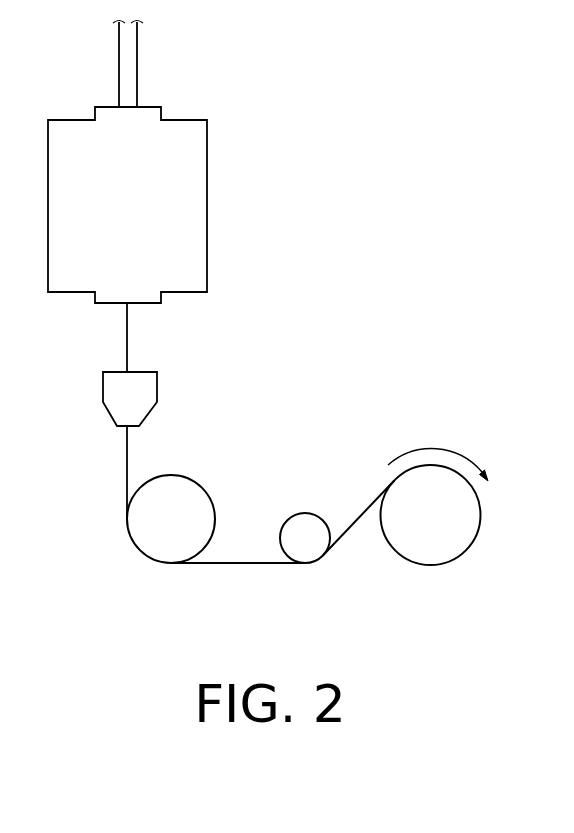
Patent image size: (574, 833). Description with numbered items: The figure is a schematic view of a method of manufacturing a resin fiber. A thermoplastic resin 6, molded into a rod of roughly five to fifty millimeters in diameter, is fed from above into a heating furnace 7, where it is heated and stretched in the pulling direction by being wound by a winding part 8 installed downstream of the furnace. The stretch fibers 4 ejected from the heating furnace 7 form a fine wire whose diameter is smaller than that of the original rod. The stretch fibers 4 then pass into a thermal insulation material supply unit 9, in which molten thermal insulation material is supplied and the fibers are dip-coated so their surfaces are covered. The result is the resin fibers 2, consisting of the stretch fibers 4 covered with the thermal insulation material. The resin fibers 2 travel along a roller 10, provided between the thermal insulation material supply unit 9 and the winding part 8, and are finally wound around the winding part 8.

The resin fiber 2 is at (128, 449).
The stretch fiber 4 is at (128, 330).
The thermoplastic resin 6 is at (136, 64).
The heating furnace 7 is at (190, 197).
The winding part 8 is at (470, 507).
The thermal insulation material supply unit 9 is at (108, 390).
The roller 10 is at (304, 525).